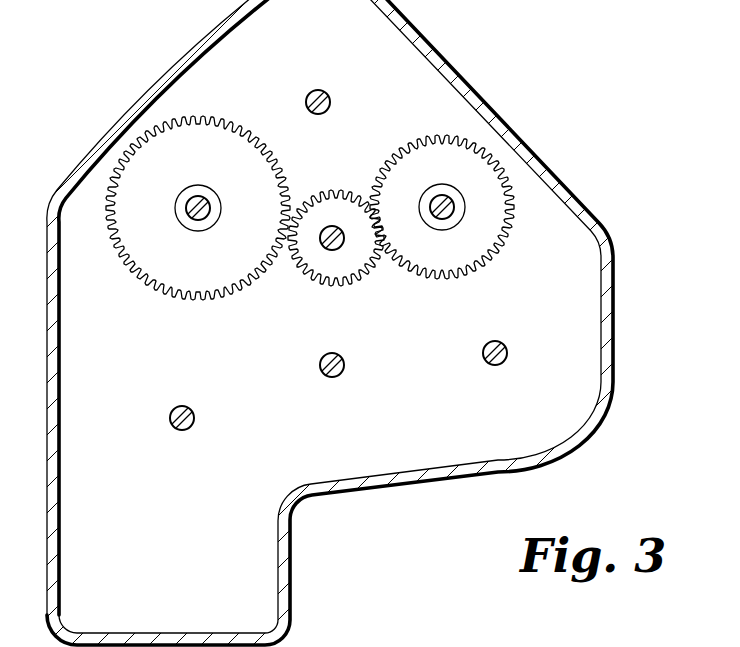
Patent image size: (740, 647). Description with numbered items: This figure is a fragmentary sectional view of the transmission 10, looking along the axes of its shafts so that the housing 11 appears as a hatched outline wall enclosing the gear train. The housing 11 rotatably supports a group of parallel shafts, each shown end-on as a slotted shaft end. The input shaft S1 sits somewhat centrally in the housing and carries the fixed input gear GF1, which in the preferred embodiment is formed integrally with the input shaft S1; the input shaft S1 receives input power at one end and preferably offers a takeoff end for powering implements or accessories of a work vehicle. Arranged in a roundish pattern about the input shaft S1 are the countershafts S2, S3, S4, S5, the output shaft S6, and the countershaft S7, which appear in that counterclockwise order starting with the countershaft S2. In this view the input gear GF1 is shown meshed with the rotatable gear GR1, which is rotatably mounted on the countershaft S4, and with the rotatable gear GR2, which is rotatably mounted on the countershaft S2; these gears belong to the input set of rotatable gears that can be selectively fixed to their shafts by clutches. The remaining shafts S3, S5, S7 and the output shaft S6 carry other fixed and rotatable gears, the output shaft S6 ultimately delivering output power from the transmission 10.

The transmission 10 is at (370, 323).
The housing 11 is at (443, 481).
The rotatable gear GR1 is at (237, 122).
The rotatable gear GR2 is at (510, 230).
The fixed input gear GF1 is at (344, 192).
The input shaft S1 is at (330, 250).
The countershaft S2 is at (440, 220).
The countershaft S3 is at (314, 91).
The countershaft S4 is at (199, 222).
The countershaft S5 is at (186, 407).
The output shaft S6 is at (344, 364).
The countershaft S7 is at (506, 346).